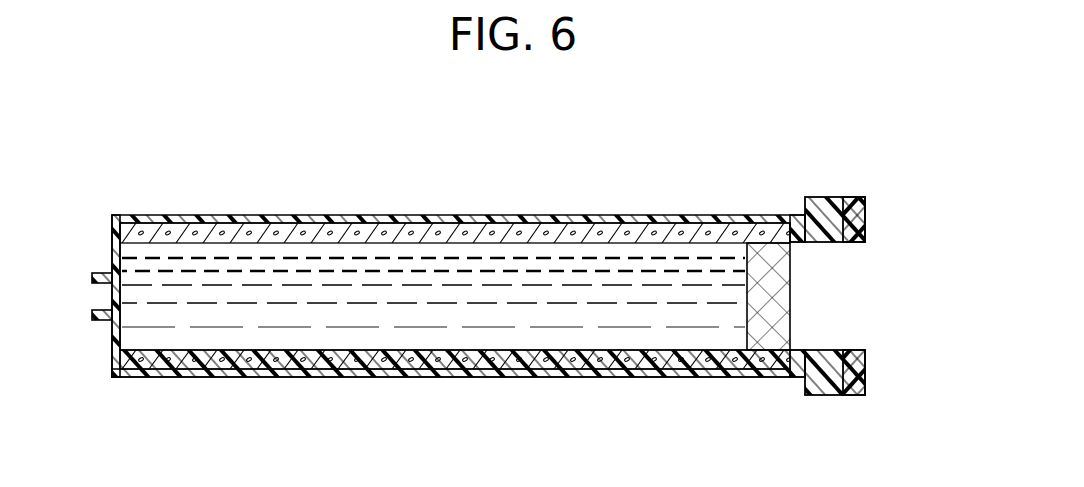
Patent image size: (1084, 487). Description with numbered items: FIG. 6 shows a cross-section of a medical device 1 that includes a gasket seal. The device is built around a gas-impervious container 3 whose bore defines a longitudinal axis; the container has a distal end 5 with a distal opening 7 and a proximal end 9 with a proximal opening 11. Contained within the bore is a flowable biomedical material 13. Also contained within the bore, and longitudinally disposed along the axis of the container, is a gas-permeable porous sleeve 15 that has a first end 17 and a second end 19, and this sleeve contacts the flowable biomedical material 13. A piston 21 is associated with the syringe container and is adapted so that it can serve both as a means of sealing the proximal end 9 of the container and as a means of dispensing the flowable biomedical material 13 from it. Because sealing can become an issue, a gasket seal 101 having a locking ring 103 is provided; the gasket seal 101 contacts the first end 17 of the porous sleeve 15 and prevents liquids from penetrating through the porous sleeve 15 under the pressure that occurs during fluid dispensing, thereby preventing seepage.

The medical device 1 is at (416, 182).
The gas-impervious container 3 is at (489, 211).
The distal end 5 is at (126, 382).
The distal opening 7 is at (121, 297).
The proximal end 9 is at (805, 210).
The proximal opening 11 is at (852, 330).
The flowable biomedical material 13 is at (430, 339).
The gas-permeable porous sleeve 15 is at (280, 225).
The first end 17 is at (786, 222).
The second end 19 is at (141, 216).
The piston 21 is at (748, 331).
The gasket seal 101 is at (835, 243).
The locking ring 103 is at (865, 396).